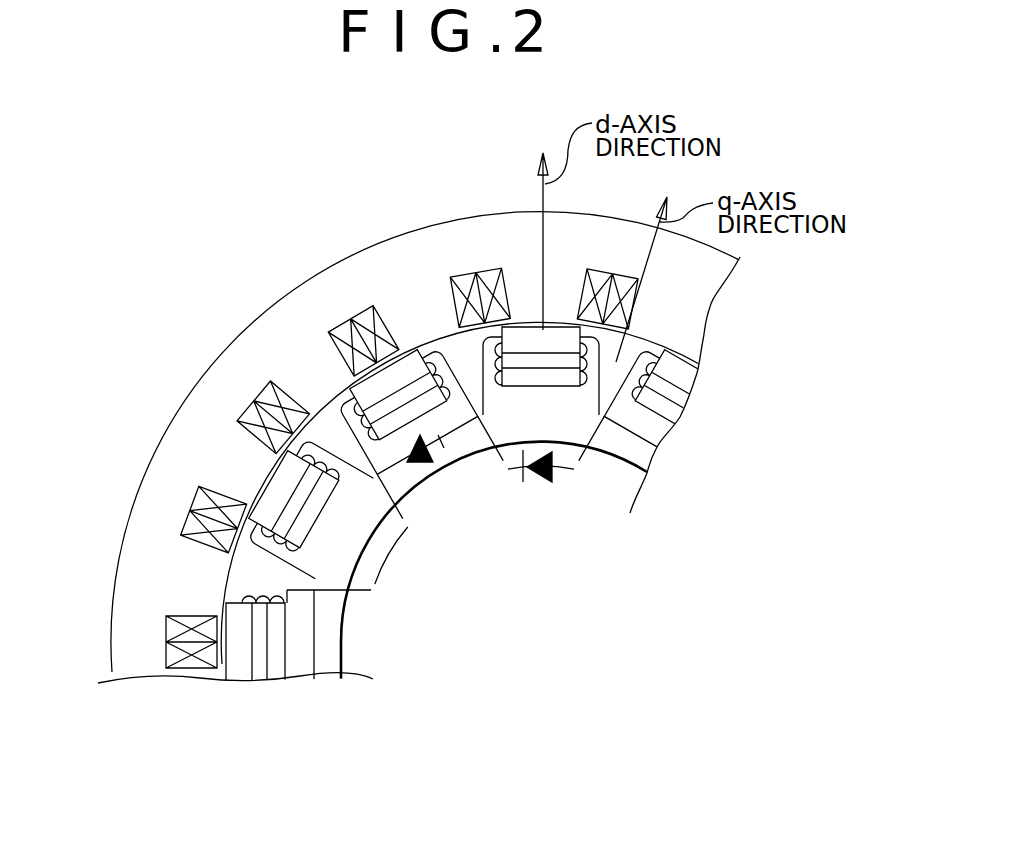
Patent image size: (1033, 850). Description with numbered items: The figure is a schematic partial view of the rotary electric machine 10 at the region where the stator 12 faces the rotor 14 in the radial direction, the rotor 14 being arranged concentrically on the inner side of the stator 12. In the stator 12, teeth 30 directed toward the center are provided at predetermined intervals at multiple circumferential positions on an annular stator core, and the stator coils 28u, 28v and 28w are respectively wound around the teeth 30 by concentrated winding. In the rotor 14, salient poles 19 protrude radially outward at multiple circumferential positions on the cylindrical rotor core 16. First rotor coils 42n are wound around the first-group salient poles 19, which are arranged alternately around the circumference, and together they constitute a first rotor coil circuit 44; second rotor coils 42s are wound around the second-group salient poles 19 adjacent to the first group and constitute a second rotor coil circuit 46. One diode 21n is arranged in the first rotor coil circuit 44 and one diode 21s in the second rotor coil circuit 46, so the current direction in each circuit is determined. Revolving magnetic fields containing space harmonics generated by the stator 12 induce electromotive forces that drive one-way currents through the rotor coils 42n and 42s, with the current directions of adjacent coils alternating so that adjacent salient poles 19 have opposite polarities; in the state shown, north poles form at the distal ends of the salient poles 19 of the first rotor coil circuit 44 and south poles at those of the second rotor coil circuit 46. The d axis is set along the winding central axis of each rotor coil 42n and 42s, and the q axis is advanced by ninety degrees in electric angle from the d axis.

The rotary electric machine 10 is at (742, 143).
The stator 12 is at (525, 233).
The rotor 14 is at (437, 527).
The rotor core 16 is at (573, 540).
The salient poles 19 is at (560, 327).
The diode 21n is at (433, 452).
The diode 21s is at (540, 482).
The stator coil 28u is at (268, 395).
The stator coil 28v is at (598, 287).
The stator coil 28w is at (477, 287).
The teeth 30 is at (418, 298).
The first rotor coils 42n is at (523, 285).
The second rotor coils 42s is at (310, 372).
The first rotor coil circuit 44 is at (598, 350).
The second rotor coil circuit 46 is at (277, 650).